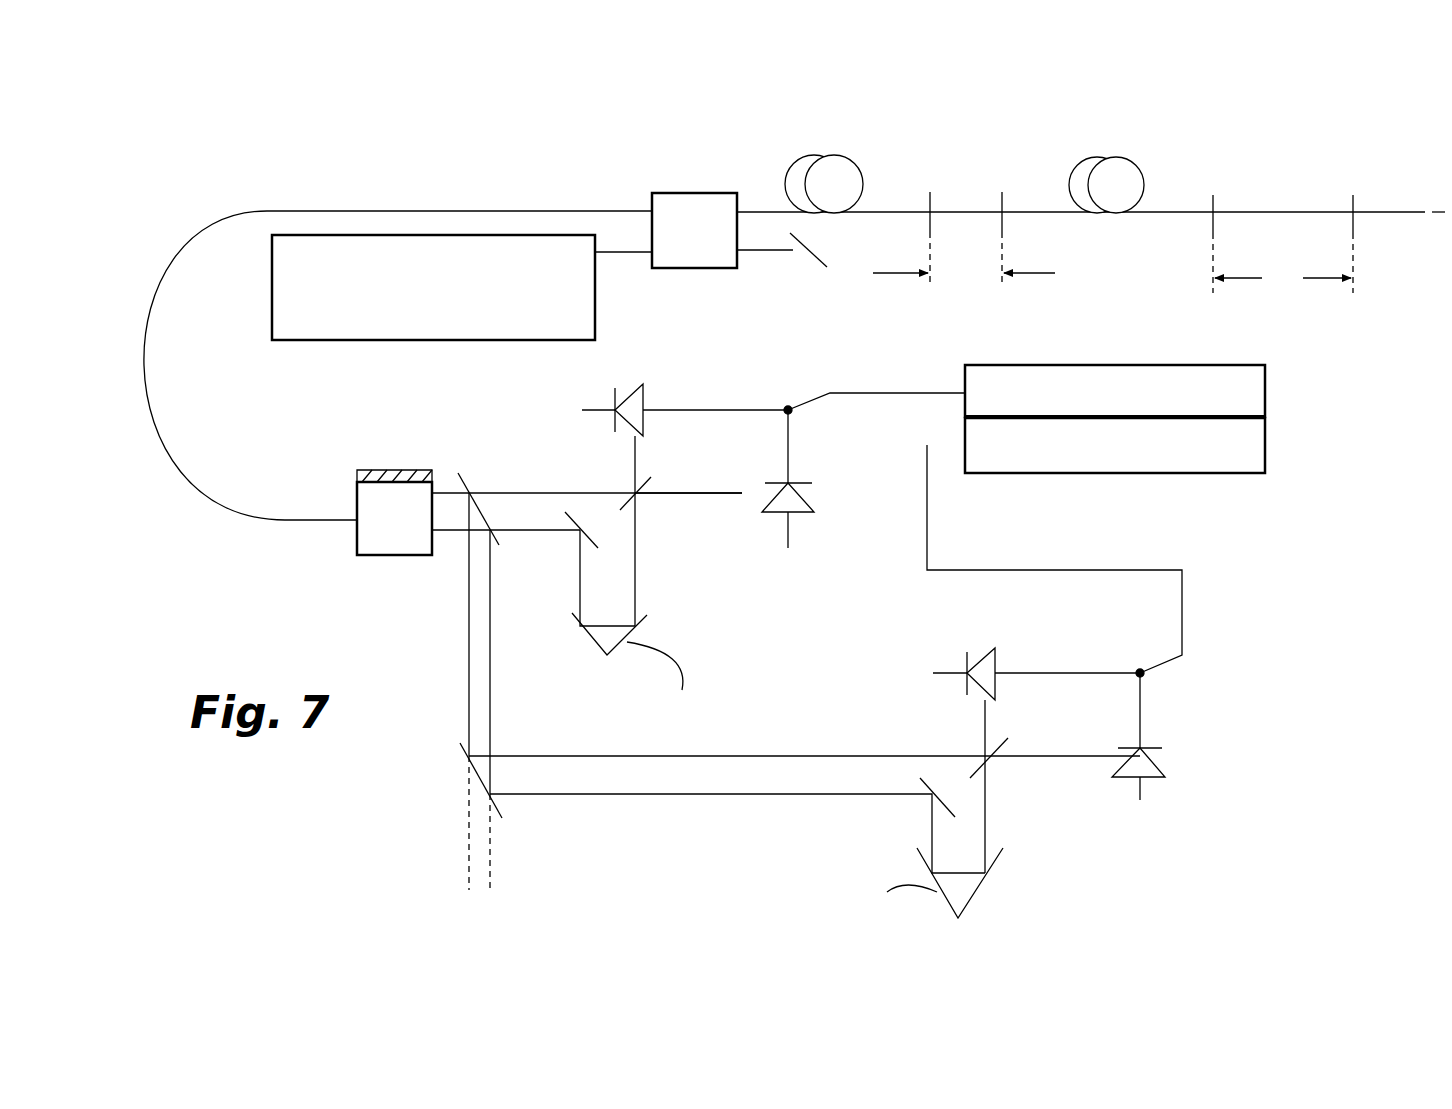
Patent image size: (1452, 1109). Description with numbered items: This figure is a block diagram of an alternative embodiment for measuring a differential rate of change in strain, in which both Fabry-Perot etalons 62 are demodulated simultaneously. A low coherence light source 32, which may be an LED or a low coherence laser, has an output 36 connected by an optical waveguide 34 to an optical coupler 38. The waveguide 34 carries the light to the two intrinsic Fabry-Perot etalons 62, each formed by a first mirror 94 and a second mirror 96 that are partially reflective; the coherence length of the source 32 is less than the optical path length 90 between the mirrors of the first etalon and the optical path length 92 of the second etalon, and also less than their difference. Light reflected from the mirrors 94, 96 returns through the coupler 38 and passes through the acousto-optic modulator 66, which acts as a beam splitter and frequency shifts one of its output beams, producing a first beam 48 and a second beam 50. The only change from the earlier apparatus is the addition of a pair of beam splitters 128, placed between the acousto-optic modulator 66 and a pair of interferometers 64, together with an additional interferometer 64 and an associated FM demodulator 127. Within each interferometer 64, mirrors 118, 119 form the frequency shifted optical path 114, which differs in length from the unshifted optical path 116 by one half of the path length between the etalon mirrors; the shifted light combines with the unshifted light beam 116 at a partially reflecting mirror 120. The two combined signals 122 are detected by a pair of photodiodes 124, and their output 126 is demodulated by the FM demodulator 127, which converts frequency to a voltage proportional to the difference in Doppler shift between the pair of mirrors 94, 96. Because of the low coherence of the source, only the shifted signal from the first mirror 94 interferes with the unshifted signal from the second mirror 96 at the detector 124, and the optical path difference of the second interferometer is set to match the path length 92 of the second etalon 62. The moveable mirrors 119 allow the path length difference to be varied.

The low coherence light source 32 is at (538, 343).
The optical waveguide 34 is at (840, 157).
The output 36 is at (597, 253).
The optical coupler 38 is at (682, 193).
The first beam 48 is at (448, 533).
The second beam 50 is at (448, 487).
The Fabry-Perot etalon 62 is at (1298, 128).
The interferometer 64 is at (688, 583).
The acousto-optic modulator 66 is at (388, 557).
The optical path length 90 is at (964, 261).
The optical path length 92 is at (1283, 242).
The first mirror 94 is at (927, 193).
The second mirror 96 is at (1003, 198).
The shifted optical path 114 is at (567, 535).
The unshifted optical path 116 is at (597, 493).
The mirror 118 is at (598, 538).
The mirror 119 is at (598, 643).
The partially reflecting mirror 120 is at (648, 478).
The combined signal 122 is at (632, 448).
The photodiode 124 is at (640, 387).
The output 126 is at (788, 410).
The FM demodulator 127 is at (980, 365).
The beam splitter 128 is at (473, 485).